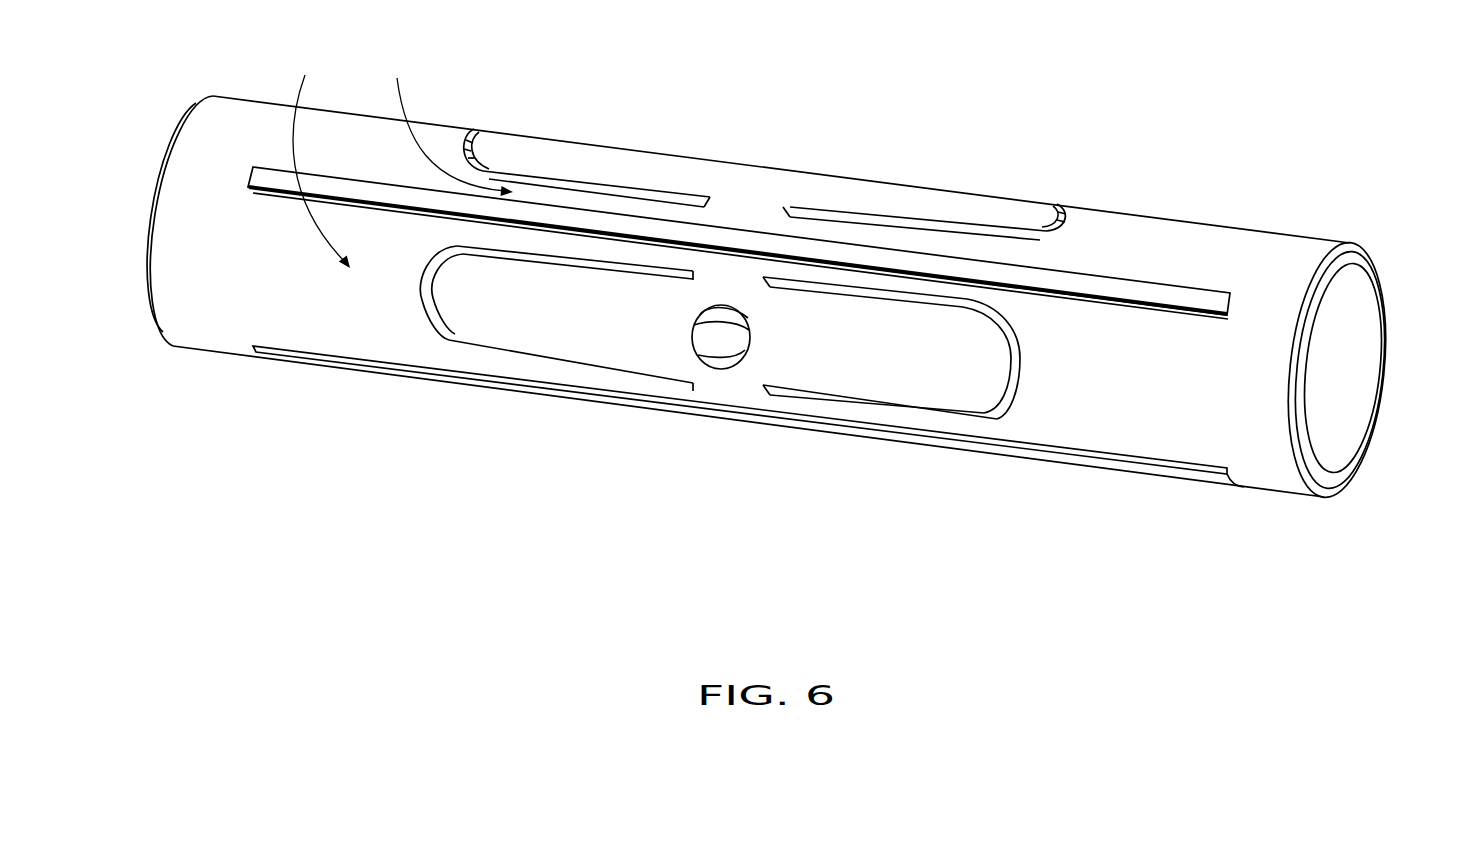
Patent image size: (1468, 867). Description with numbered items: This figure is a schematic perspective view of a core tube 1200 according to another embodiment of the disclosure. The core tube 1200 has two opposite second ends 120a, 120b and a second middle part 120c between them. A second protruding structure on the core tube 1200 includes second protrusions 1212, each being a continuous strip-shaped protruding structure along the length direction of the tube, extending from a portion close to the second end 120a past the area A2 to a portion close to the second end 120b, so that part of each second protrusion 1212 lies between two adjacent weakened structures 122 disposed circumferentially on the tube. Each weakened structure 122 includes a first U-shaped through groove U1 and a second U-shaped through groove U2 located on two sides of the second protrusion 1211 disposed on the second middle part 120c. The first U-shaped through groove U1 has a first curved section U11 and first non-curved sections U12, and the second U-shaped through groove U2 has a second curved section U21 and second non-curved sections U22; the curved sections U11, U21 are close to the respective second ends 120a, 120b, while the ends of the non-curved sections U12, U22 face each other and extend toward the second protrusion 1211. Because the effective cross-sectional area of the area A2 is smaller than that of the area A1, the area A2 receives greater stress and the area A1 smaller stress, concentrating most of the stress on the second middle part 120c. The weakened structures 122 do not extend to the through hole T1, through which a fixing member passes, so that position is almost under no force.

The core tube 1200 is at (766, 279).
The second end 120a is at (1390, 310).
The second end 120b is at (150, 178).
The second middle part 120c is at (1093, 192).
The second protrusion 1212 is at (1173, 293).
The weakened structure 122 is at (790, 338).
The first U-shaped through groove U1 is at (953, 367).
The first curved section U11 is at (987, 415).
The first non-curved section U12 is at (822, 398).
The second U-shaped through groove U2 is at (565, 297).
The second curved section U21 is at (430, 320).
The second non-curved section U22 is at (537, 362).
The second protrusion 1211 is at (736, 348).
The through hole T1 is at (738, 329).
The area A1 is at (321, 157).
The area A2 is at (447, 123).